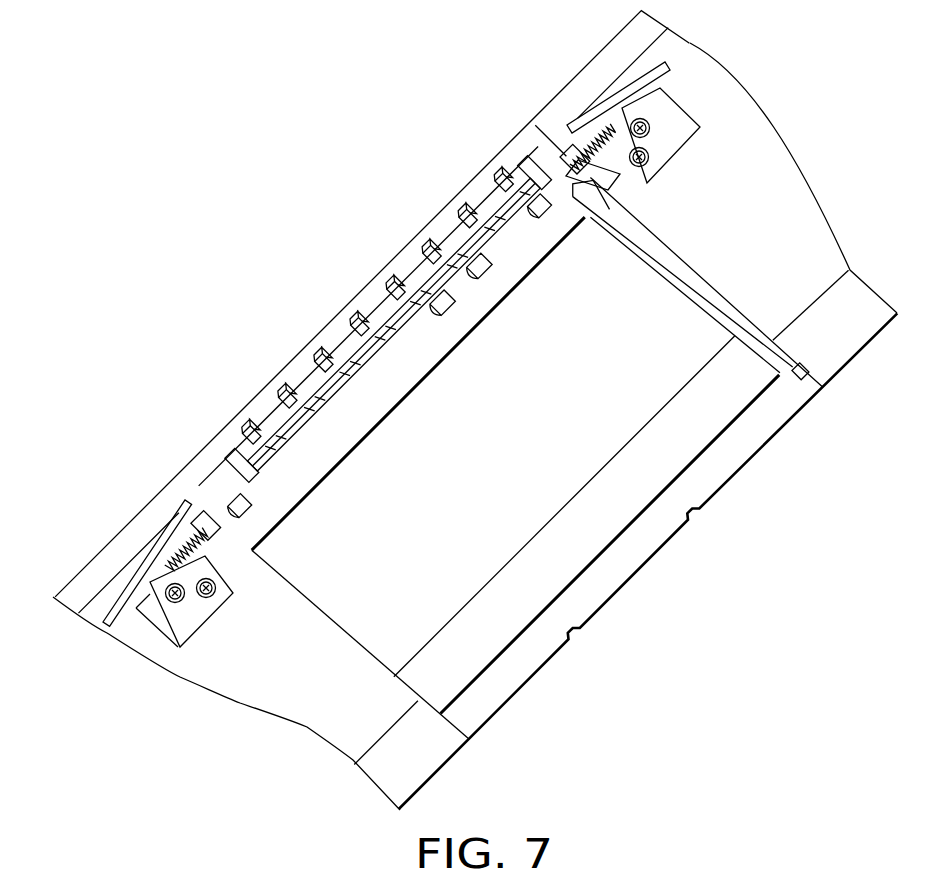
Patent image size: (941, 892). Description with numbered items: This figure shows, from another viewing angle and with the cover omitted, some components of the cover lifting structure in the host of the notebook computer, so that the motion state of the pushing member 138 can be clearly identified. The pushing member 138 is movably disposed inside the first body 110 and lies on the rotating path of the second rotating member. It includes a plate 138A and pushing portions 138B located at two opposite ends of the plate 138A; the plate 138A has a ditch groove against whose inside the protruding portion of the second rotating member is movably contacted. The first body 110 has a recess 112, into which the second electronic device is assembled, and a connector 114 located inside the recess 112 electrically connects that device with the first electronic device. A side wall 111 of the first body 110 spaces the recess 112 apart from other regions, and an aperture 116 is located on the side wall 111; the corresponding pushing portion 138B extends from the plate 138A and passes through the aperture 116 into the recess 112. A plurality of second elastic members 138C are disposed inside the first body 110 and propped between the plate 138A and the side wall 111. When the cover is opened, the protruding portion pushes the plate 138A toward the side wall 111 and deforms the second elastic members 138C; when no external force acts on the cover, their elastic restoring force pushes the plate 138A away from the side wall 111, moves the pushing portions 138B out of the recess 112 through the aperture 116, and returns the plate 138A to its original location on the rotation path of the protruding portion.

The first body 110 is at (788, 205).
The side wall 111 is at (270, 482).
The recess 112 is at (503, 497).
The connector 114 is at (488, 264).
The aperture 116 is at (200, 515).
The pushing member 138 is at (150, 405).
The plate 138A is at (460, 253).
The pushing portions 138B is at (242, 462).
The second elastic members 138C is at (357, 313).